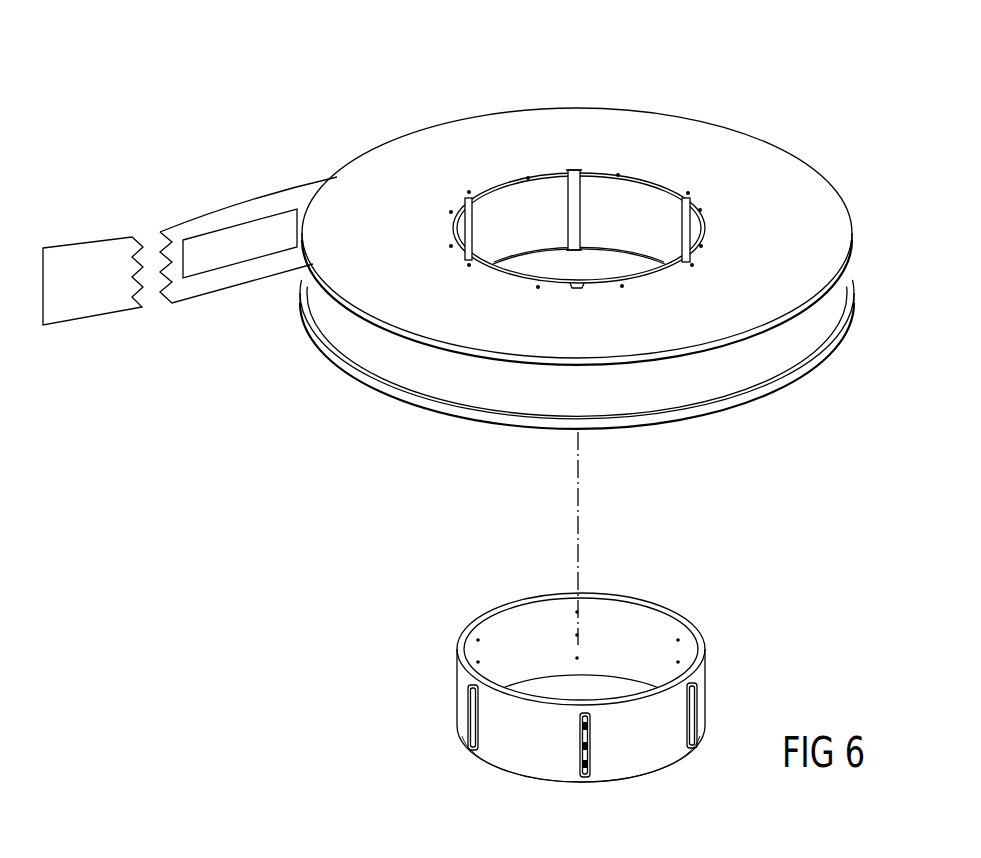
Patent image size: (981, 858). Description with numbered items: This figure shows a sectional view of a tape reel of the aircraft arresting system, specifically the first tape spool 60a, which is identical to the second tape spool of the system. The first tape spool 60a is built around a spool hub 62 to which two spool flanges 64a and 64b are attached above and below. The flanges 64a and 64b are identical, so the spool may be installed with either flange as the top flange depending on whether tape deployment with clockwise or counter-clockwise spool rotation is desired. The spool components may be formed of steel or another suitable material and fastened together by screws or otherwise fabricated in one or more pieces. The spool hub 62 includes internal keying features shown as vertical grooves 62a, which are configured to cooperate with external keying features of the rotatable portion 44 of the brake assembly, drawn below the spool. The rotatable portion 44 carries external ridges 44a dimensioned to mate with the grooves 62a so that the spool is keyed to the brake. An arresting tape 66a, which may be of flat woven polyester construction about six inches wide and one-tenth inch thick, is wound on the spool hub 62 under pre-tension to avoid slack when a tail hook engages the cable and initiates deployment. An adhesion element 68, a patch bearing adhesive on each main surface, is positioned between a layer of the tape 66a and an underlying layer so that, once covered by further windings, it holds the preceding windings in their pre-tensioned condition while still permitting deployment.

The first tape spool 60a is at (539, 250).
The spool hub 62 is at (597, 183).
The vertical grooves 62a is at (568, 208).
The spool flange 64a is at (760, 140).
The spool flange 64b is at (783, 396).
The arresting tape 66a is at (213, 218).
The adhesion element 68 is at (218, 268).
The rotatable portion 44 is at (493, 607).
The external ridges 44a is at (592, 753).